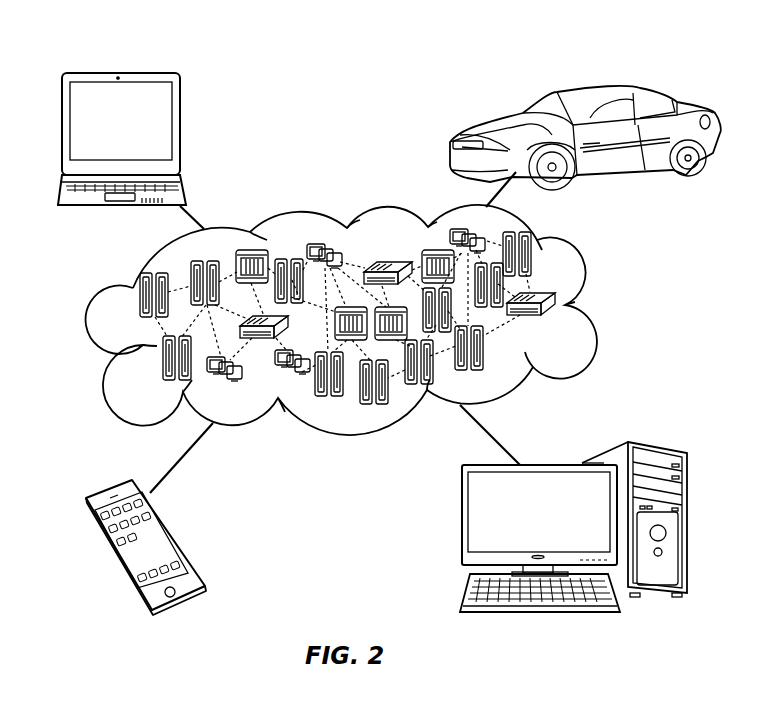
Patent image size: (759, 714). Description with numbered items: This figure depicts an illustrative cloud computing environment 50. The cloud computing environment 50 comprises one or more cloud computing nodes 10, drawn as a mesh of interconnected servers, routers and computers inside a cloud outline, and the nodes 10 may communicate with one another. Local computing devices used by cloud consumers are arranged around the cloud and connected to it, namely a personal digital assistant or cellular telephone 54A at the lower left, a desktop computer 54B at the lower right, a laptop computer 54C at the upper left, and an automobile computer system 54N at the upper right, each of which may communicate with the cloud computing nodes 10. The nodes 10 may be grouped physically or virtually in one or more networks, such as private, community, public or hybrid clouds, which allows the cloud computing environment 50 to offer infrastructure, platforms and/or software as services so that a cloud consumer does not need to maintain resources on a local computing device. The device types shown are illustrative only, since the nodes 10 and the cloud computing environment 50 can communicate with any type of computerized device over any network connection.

The cloud computing node 10 is at (557, 317).
The cloud computing environment 50 is at (597, 308).
The personal digital assistant or cellular telephone 54A is at (160, 541).
The desktop computer 54B is at (607, 447).
The laptop computer 54C is at (164, 138).
The automobile computer system 54N is at (452, 145).